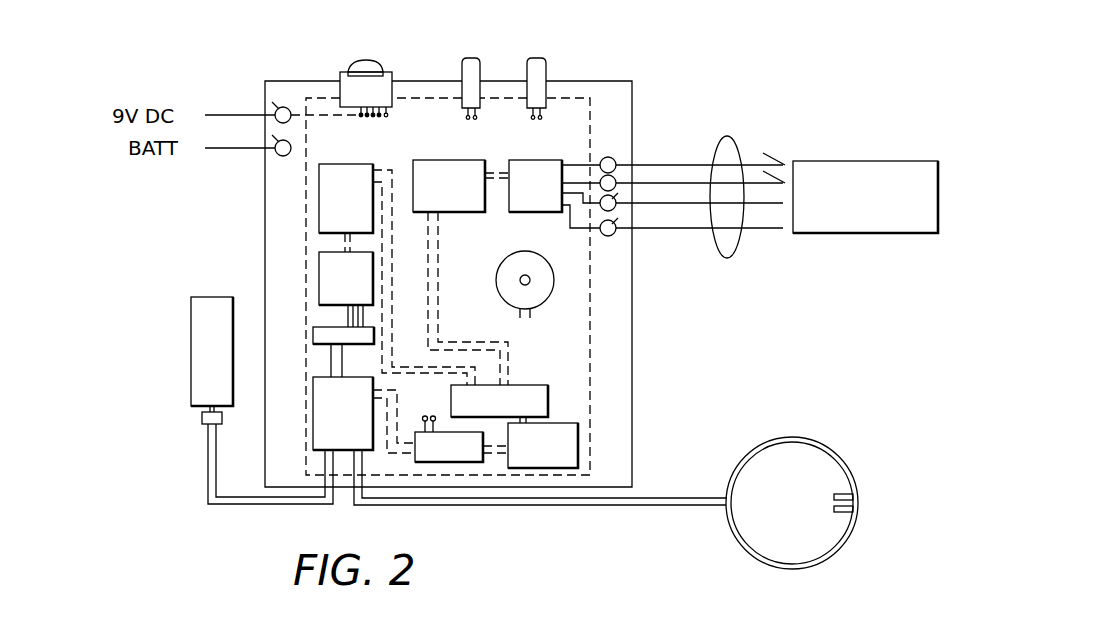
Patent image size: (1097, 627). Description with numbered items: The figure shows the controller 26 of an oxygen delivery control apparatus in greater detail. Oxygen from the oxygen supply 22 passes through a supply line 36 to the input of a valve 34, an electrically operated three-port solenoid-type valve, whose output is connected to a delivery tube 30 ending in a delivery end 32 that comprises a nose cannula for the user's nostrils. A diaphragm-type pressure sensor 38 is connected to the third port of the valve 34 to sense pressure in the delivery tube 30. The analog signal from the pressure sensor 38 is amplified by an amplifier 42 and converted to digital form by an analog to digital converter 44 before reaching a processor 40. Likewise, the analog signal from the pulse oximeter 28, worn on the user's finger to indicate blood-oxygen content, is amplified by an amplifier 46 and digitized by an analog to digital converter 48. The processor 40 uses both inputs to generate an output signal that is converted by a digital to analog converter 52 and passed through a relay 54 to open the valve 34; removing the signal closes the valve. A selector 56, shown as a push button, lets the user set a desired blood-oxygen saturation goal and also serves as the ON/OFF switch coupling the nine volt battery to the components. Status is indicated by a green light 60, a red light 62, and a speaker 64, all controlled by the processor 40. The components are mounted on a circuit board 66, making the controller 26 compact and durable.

The oxygen supply 22 is at (191, 320).
The controller 26 is at (690, 98).
The pulse oximeter 28 is at (873, 161).
The delivery tube 30 is at (668, 507).
The delivery end 32 is at (807, 430).
The valve 34 is at (330, 425).
The supply line 36 is at (208, 456).
The pressure sensor 38 is at (323, 328).
The processor 40 is at (548, 401).
The amplifier 42 is at (333, 291).
The analog to digital converter 44 is at (333, 210).
The amplifier 46 is at (522, 198).
The analog to digital converter 48 is at (436, 198).
The digital to analog converter 52 is at (530, 457).
The relay 54 is at (466, 462).
The selector 56 is at (366, 73).
The green light 60 is at (471, 57).
The red light 62 is at (536, 57).
The speaker 64 is at (554, 277).
The circuit board 66 is at (305, 204).